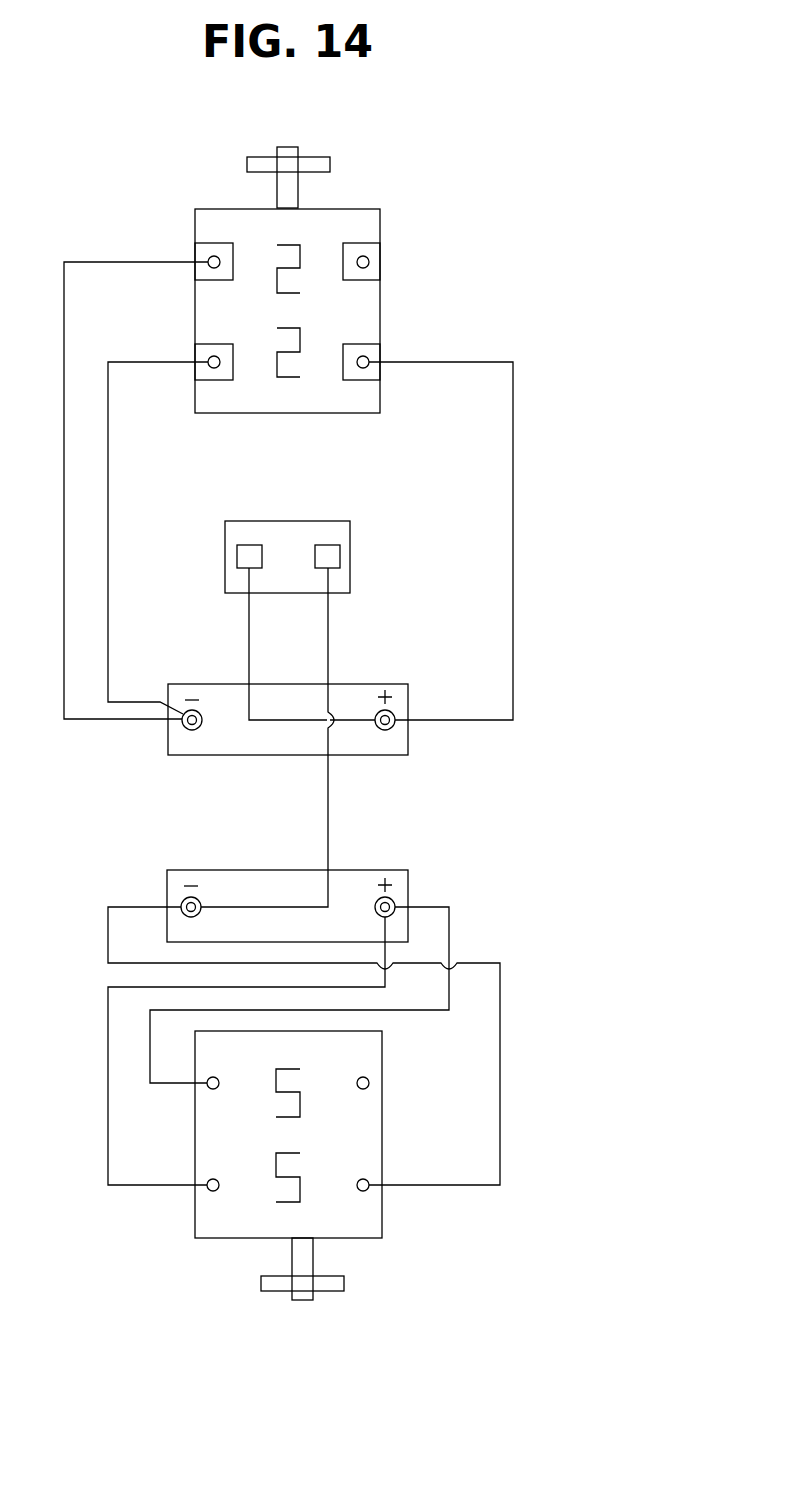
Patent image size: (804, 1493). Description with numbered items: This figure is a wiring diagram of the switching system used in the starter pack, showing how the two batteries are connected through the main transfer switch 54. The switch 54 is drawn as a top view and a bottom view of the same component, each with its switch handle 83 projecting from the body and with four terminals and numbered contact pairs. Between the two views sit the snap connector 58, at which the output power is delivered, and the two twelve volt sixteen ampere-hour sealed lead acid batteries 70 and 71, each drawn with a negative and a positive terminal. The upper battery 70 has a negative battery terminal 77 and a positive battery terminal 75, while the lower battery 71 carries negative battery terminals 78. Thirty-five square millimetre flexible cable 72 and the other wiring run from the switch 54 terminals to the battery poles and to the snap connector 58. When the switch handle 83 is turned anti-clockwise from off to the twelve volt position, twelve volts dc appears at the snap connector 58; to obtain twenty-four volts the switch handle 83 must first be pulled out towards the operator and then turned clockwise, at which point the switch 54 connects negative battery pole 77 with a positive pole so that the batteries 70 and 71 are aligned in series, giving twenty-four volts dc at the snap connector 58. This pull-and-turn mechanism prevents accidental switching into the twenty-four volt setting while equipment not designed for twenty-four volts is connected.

The main transfer switch 54 is at (375, 229).
The switch handle 83 is at (289, 146).
The flexible cable 72 is at (122, 261).
The snap connector 58 is at (350, 555).
The sealed lead acid battery 70 is at (350, 690).
The sealed lead acid battery 71 is at (350, 876).
The negative battery terminal 77 is at (190, 730).
The positive battery terminal 75 is at (385, 730).
The negative battery terminal 78 is at (200, 900).